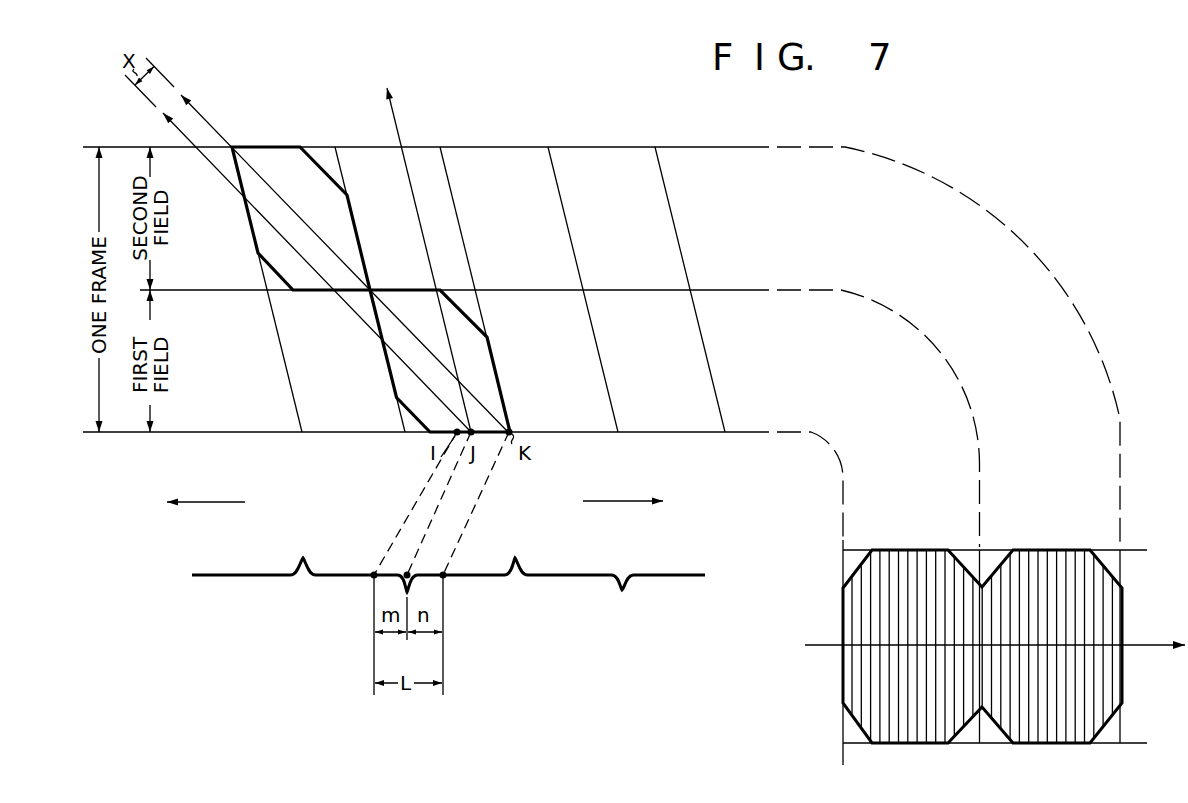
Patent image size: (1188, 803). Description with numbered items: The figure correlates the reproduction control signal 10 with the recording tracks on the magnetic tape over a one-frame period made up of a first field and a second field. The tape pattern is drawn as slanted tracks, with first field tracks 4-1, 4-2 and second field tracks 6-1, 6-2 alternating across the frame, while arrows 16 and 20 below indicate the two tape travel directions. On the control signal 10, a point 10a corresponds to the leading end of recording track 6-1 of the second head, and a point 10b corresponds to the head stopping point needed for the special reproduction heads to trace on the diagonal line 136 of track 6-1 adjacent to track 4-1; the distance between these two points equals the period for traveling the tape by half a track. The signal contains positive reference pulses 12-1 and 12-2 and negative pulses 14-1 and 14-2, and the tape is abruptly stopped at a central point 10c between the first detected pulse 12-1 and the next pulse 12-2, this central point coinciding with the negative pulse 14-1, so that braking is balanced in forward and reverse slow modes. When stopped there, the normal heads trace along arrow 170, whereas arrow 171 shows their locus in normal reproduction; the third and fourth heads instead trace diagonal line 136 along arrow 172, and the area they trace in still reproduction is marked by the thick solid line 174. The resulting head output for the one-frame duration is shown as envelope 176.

The first field track 4-1 is at (333, 433).
The first field track 4-2 is at (428, 146).
The second field track 6-1 is at (306, 146).
The second field track 6-2 is at (515, 146).
The reproduction control signal 10 is at (220, 578).
The point 10a is at (372, 572).
The point 10b is at (445, 578).
The central point 10c is at (412, 572).
The reference pulse 12-1 is at (297, 570).
The reference pulse 12-2 is at (520, 569).
The negative pulse 14-1 is at (398, 582).
The negative pulse 14-2 is at (626, 585).
The arrow 16 is at (210, 503).
The arrow 20 is at (633, 502).
The diagonal line 136 is at (422, 335).
The arrow 170 is at (217, 173).
The arrow 171 is at (395, 122).
The arrow 172 is at (211, 125).
The thick solid line 174 is at (513, 393).
The envelope 176 is at (1045, 549).